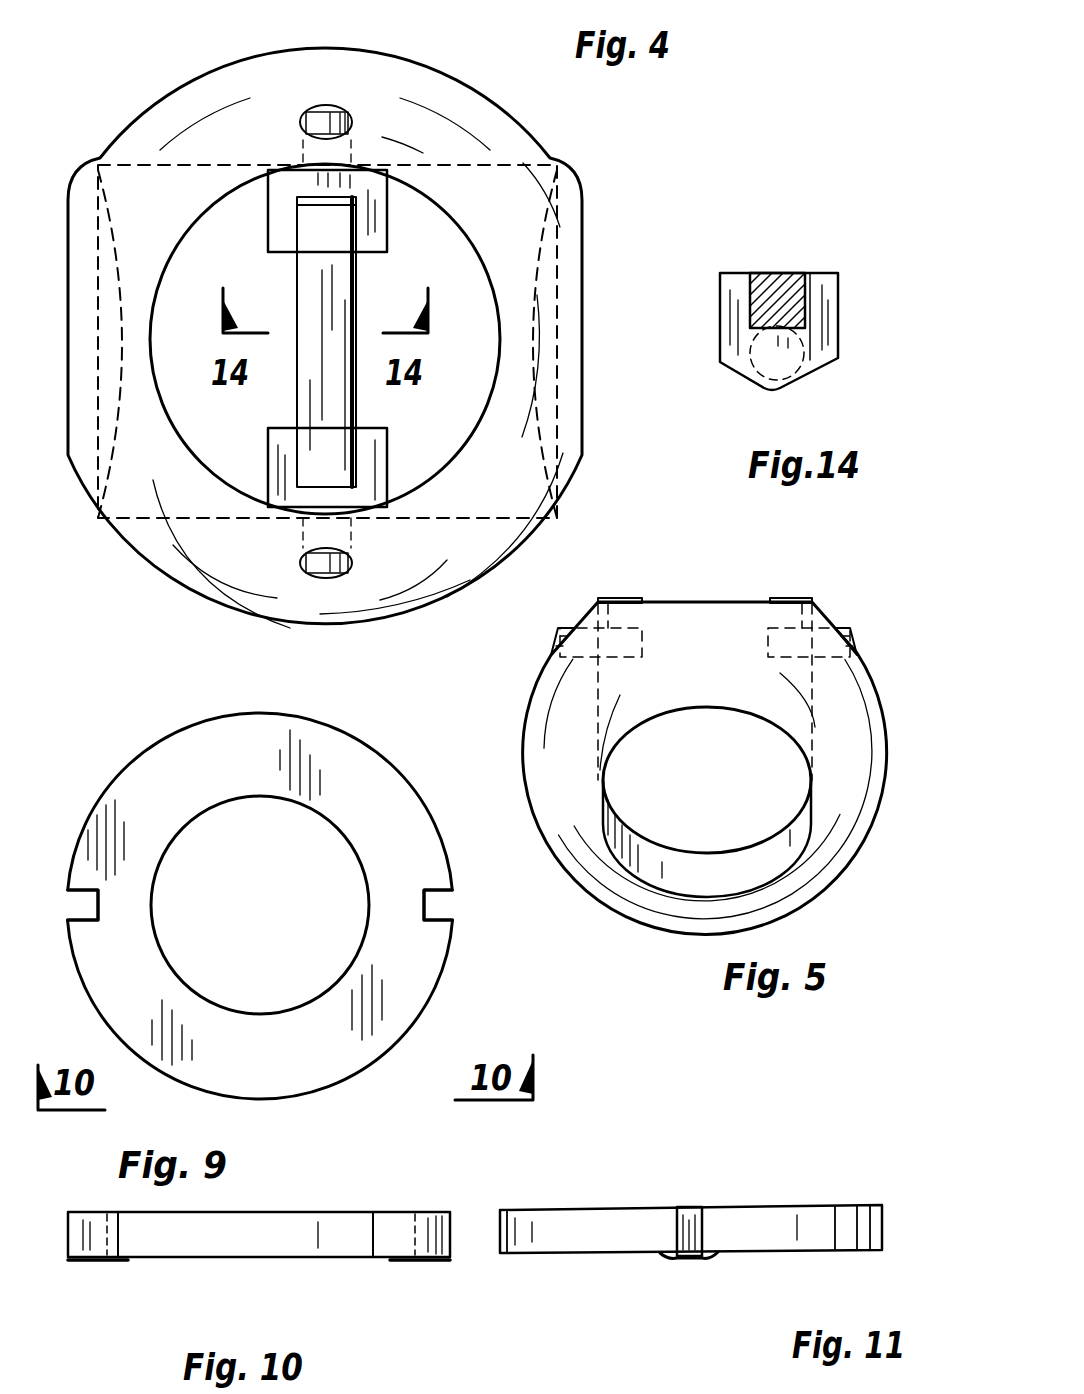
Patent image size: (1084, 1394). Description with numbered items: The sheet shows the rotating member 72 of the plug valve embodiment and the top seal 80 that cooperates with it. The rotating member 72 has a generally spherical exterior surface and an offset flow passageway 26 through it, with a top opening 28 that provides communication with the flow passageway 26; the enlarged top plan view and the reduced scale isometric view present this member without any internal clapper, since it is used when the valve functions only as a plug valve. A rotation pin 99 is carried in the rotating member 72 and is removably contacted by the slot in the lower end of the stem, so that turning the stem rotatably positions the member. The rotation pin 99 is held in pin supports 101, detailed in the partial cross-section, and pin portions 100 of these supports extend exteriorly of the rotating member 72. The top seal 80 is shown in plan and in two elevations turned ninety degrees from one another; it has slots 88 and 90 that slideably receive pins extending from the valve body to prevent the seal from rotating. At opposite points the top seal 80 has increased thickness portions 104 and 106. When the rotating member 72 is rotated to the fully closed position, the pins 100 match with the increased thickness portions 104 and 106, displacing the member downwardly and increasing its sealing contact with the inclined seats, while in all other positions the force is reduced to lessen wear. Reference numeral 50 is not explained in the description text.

In FIG. 4, the housing body 50 is at (327, 72).
In FIG. 4, the top opening 28 is at (485, 393).
In FIG. 4, the flow passageway 26 is at (490, 517).
In FIG. 4, the rotating member 72 is at (443, 590).
In FIG. 5, the rotating member 72 is at (690, 915).
In FIG. 4, the rotation pin 99 is at (340, 302).
In FIG. 14, the rotation pin 99 is at (780, 298).
In FIG. 4, the pin supports 101 is at (282, 230).
In FIG. 14, the pin supports 101 is at (830, 290).
In FIG. 5, the pin supports 101 is at (627, 600).
In FIG. 4, the pin portions 100 is at (318, 123).
In FIG. 14, the pin portions 100 is at (815, 362).
In FIG. 5, the pin portions 100 is at (560, 630).
In FIG. 9, the top seal 80 is at (395, 1015).
In FIG. 10, the top seal 80 is at (335, 1228).
In FIG. 11, the top seal 80 is at (645, 1225).
In FIG. 9, the slot 88 is at (434, 912).
In FIG. 11, the slot 88 is at (695, 1212).
In FIG. 9, the slot 90 is at (76, 897).
In FIG. 10, the increased thickness portion 104 is at (95, 1262).
In FIG. 10, the increased thickness portion 106 is at (428, 1262).
In FIG. 11, the increased thickness portion 106 is at (710, 1258).